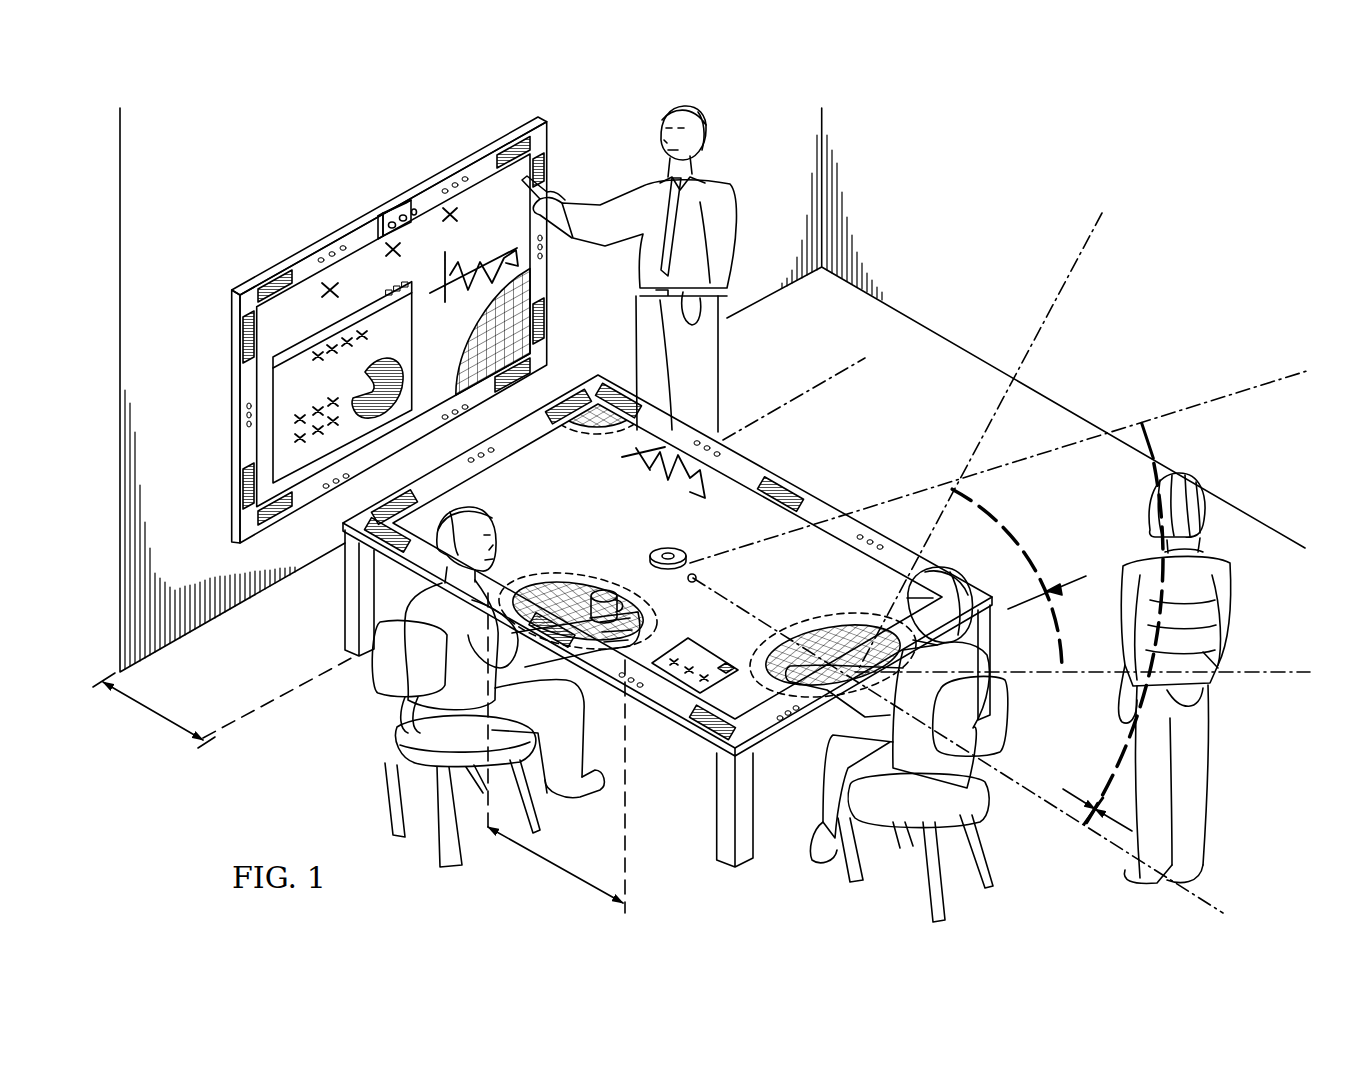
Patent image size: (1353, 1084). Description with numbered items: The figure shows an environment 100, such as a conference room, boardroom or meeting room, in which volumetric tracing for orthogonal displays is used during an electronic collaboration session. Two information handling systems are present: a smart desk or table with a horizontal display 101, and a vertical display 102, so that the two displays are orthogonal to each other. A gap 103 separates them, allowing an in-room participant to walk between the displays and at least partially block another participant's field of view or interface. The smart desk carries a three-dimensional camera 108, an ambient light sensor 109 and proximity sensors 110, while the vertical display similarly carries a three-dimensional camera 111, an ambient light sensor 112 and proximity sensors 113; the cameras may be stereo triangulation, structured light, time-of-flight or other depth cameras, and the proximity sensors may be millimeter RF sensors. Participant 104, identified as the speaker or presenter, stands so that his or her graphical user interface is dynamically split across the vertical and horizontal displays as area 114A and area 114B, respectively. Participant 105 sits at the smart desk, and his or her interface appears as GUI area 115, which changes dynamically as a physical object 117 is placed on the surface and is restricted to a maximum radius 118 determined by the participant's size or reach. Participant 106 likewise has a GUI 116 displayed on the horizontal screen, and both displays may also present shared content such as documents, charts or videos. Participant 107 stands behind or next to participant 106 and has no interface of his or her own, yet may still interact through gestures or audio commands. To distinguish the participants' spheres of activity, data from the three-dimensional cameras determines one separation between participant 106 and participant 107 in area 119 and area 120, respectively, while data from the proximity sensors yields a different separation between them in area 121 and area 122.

The environment 100 is at (1192, 191).
The horizontal display 101 is at (560, 493).
The vertical display 102 is at (298, 314).
The gap 103 is at (155, 713).
The participant 104 is at (706, 128).
The participant 105 is at (580, 793).
The participant 106 is at (833, 840).
The participant 107 is at (1226, 617).
The 3D camera 108 is at (662, 547).
The ALS 109 is at (696, 576).
The proximity sensors 110 is at (787, 493).
The 3D camera 111 is at (392, 207).
The ALS 112 is at (415, 201).
The proximity sensors 113 is at (528, 142).
The area 114A is at (518, 297).
The area 114B is at (603, 398).
The GUI area 115 is at (545, 573).
The GUI 116 is at (840, 618).
The physical object 117 is at (607, 587).
The maximum radius 118 is at (557, 867).
The area 119 is at (1075, 795).
The area 120 is at (1110, 836).
The area 121 is at (1026, 596).
The area 122 is at (1036, 580).